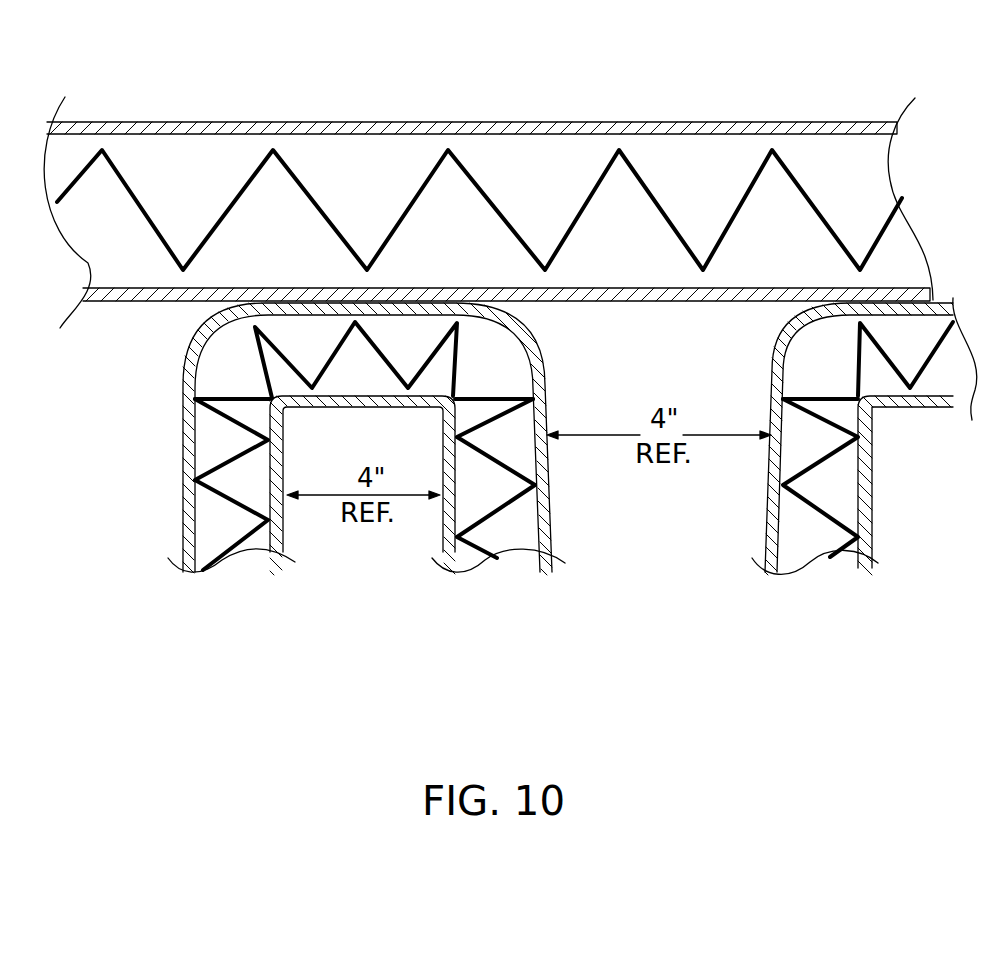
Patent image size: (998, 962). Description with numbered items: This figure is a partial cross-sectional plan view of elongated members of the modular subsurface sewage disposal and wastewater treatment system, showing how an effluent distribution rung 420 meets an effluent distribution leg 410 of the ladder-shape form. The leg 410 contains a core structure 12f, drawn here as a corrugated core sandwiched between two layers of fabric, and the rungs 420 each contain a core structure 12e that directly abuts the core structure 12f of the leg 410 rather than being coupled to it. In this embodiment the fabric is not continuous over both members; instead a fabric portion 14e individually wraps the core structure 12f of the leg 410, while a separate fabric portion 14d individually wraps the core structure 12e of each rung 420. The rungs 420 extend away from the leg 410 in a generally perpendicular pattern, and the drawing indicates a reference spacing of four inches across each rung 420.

The effluent distribution leg 410 is at (488, 202).
The fabric portion 14e is at (188, 121).
The core structure 12f is at (322, 207).
The effluent distribution rung 420 is at (518, 436).
The fabric portion 14d is at (183, 480).
The core structure 12e is at (230, 424).